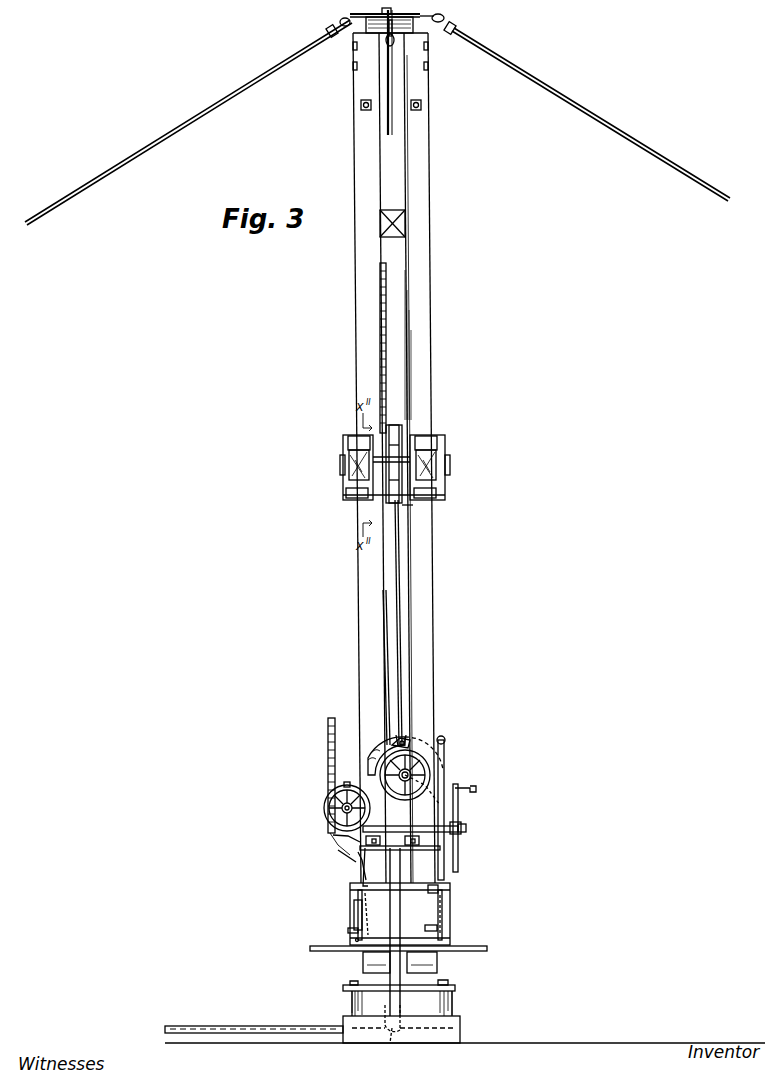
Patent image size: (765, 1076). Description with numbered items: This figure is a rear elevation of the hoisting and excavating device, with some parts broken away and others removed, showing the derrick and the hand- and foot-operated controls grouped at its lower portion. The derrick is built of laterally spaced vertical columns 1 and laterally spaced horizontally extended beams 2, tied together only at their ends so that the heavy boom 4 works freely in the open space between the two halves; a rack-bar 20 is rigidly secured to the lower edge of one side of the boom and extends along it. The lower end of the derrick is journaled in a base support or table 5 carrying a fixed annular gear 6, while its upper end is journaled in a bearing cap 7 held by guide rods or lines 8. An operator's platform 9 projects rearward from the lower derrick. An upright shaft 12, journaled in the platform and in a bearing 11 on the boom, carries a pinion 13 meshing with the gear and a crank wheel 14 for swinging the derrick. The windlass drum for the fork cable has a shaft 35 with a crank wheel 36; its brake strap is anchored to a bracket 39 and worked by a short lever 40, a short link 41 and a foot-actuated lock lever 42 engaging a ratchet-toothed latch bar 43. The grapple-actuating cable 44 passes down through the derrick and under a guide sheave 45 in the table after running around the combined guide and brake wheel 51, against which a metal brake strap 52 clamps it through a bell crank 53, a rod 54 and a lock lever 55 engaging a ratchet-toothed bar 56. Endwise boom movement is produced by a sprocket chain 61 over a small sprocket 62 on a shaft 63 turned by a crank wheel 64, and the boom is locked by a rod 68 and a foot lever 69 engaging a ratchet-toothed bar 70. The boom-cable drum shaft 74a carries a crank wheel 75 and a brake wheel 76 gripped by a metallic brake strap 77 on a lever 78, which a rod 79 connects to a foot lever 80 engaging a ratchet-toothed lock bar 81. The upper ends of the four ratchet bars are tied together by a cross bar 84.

The vertical columns 1 is at (372, 168).
The horizontally extended beams 2 is at (343, 468).
The boom 4 is at (395, 253).
The base support or table 5 is at (460, 1002).
The annular gear 6 is at (455, 985).
The bearing cap 7 is at (414, 16).
The guide rods or lines 8 is at (285, 62).
The operator's platform 9 is at (310, 956).
The bearing 11 is at (360, 838).
The upright shaft 12 is at (430, 970).
The pinion 13 is at (360, 985).
The crank wheel 14 is at (440, 850).
The rack-bar 20 is at (378, 310).
The drum shaft 35 is at (340, 807).
The crank wheel 36 is at (344, 790).
The bracket 39 is at (355, 840).
The short lever 40 is at (352, 848).
The short link 41 is at (352, 852).
The foot-actuated lock lever 42 is at (355, 925).
The ratchet-toothed latch bar 43 is at (352, 922).
The grapple-actuating cable 44 is at (300, 1010).
The guide sheave 45 is at (392, 1043).
The combined guide and brake wheel 51 is at (400, 445).
The metal brake strap 52 is at (395, 432).
The bell crank 53 is at (405, 500).
The rod 54 is at (399, 568).
The lock lever 55 is at (437, 932).
The ratchet-toothed bar 56 is at (438, 900).
The sprocket chain 61 is at (328, 742).
The small sprocket 62 is at (358, 853).
The shaft 63 is at (458, 818).
The crank wheel 64 is at (462, 835).
The rod 68 is at (385, 623).
The foot lever 69 is at (363, 870).
The ratchet-toothed bar 70 is at (354, 908).
The shaft 74a is at (444, 745).
The crank wheel 75 is at (430, 792).
The brake wheel 76 is at (412, 752).
The metallic brake strap 77 is at (375, 745).
The lever 78 is at (402, 735).
The rod 79 is at (437, 757).
The foot lever 80 is at (448, 887).
The ratchet-toothed lock bar 81 is at (444, 920).
The cross bar 84 is at (365, 892).